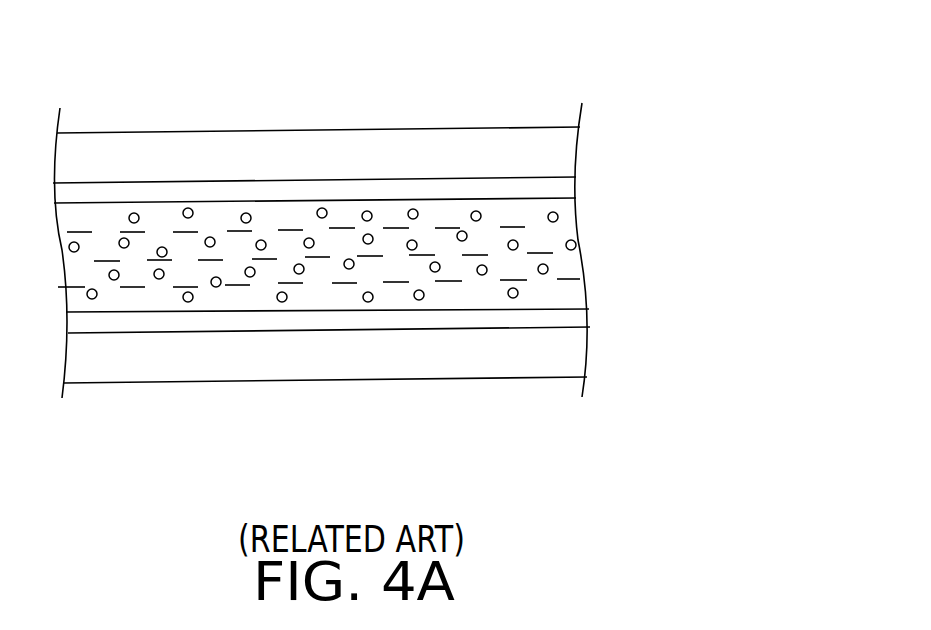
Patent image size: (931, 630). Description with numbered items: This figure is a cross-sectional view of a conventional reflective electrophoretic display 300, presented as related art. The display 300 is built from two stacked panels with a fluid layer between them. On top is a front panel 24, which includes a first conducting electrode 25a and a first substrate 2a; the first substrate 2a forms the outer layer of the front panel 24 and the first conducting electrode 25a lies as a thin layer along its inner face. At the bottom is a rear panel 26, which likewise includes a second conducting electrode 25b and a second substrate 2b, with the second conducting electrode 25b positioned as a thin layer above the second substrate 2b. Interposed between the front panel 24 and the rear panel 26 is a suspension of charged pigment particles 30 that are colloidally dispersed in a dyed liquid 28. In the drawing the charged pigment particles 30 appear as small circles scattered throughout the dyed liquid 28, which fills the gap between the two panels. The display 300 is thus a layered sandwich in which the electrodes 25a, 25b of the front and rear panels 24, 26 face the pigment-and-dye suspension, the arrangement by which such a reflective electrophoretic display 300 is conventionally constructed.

The reflective electrophoretic display 300 is at (470, 72).
The front panel 24 is at (351, 142).
The rear panel 26 is at (363, 372).
The first substrate 2a is at (316, 155).
The second substrate 2b is at (325, 363).
The first conducting electrode 25a is at (252, 188).
The second conducting electrode 25b is at (398, 317).
The dyed liquid 28 is at (484, 235).
The charged pigment particles 30 is at (366, 211).